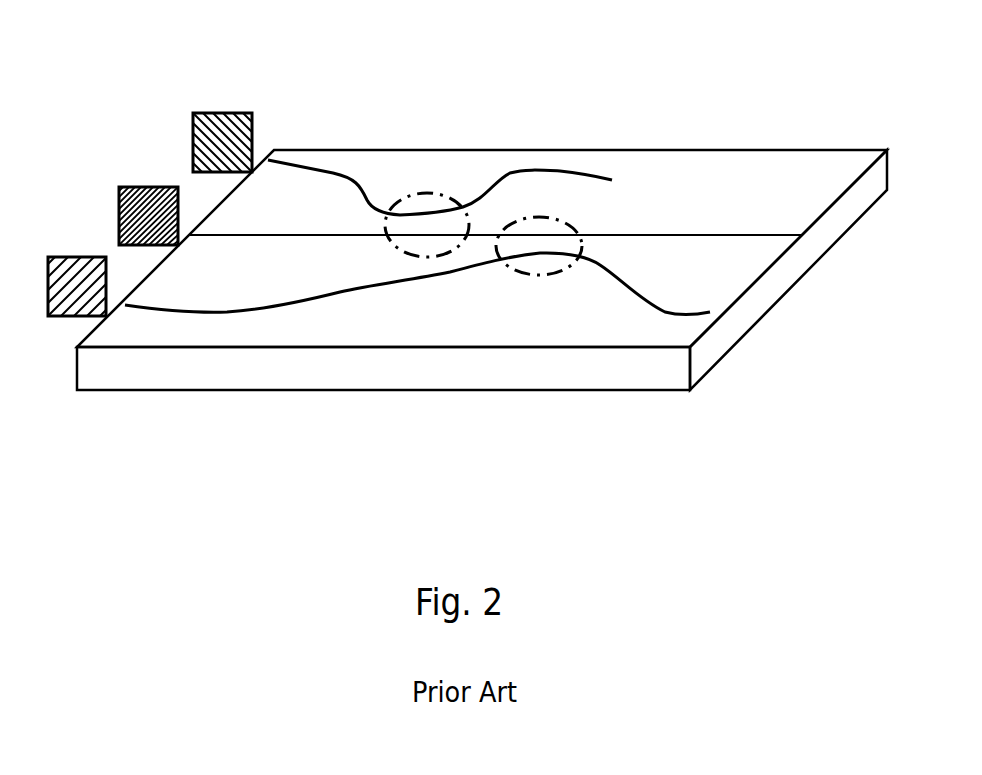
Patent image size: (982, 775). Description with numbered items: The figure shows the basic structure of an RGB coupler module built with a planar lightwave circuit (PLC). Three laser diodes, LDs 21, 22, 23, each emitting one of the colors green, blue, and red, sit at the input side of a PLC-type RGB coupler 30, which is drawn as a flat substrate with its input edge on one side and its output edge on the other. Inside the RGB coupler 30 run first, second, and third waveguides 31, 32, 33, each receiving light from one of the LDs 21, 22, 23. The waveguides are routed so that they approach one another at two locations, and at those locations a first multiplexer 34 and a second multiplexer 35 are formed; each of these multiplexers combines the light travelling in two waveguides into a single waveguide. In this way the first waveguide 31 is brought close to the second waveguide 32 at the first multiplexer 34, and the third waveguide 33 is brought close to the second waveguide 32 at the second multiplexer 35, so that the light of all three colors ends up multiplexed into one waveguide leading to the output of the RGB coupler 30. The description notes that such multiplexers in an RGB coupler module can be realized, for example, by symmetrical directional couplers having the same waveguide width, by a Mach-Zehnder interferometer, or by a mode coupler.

The laser diode 21 is at (222, 112).
The laser diode 22 is at (148, 186).
The laser diode 23 is at (77, 256).
The RGB coupler 30 is at (633, 150).
The first waveguide 31 is at (333, 175).
The second waveguide 32 is at (315, 237).
The third waveguide 33 is at (222, 312).
The first multiplexer 34 is at (422, 197).
The second multiplexer 35 is at (528, 272).